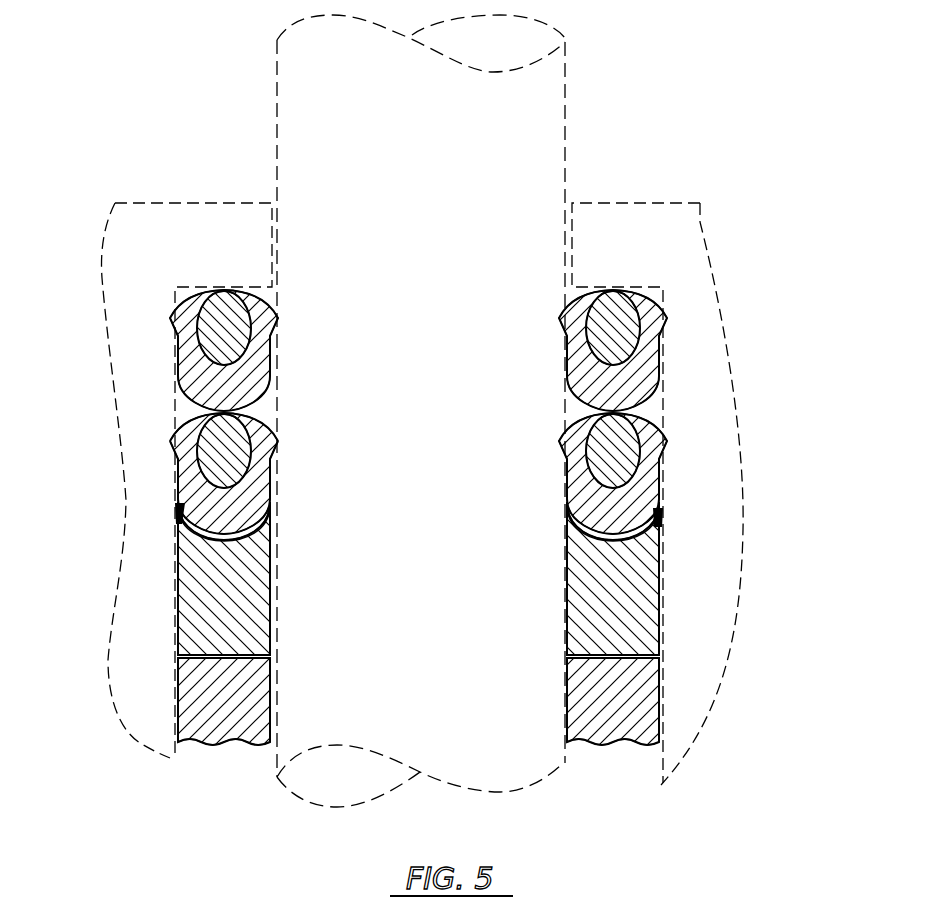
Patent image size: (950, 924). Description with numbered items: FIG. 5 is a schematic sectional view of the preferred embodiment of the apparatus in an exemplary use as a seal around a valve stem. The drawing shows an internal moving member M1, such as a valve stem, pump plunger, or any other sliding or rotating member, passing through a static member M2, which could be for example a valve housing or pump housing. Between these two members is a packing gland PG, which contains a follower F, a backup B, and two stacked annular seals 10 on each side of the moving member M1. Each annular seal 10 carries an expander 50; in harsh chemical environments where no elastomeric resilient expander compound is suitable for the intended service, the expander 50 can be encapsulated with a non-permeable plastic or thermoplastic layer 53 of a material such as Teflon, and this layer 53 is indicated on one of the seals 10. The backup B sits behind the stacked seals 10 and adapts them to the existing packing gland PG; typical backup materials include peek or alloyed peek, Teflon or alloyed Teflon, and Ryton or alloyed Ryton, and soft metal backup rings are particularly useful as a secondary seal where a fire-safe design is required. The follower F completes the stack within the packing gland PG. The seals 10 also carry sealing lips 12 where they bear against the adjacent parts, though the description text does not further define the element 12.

The internal moving member M1 is at (567, 97).
The static member M2 is at (700, 223).
The packing gland PG is at (424, 396).
The annular seal 10 is at (187, 358).
The expander 50 is at (222, 291).
The sealing lip 12 is at (192, 404).
The layer 53 is at (200, 450).
The backup B is at (180, 601).
The follower F is at (226, 737).